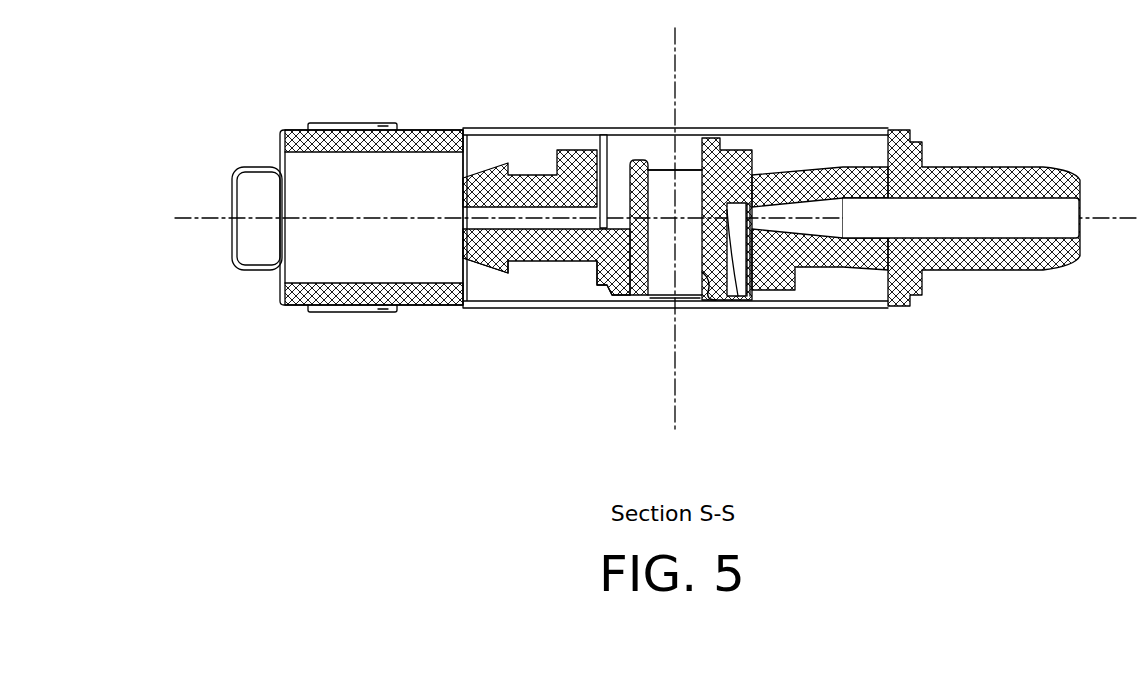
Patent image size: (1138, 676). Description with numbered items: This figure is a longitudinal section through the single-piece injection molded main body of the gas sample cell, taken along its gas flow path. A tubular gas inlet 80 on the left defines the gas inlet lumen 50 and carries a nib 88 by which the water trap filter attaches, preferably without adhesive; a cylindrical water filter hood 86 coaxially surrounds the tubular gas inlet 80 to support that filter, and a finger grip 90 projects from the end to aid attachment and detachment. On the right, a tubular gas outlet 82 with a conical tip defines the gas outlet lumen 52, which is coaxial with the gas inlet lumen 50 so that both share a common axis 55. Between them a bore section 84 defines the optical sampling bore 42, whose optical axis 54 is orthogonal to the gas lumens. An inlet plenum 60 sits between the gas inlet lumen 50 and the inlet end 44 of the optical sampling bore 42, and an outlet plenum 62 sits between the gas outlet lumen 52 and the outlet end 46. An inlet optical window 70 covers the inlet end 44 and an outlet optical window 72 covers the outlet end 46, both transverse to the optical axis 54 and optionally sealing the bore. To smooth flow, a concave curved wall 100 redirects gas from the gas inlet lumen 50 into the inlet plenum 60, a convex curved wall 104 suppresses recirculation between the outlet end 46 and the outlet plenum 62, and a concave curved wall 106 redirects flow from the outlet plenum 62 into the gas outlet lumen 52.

The optical sampling bore 42 is at (658, 262).
The inlet end 44 is at (696, 139).
The outlet end 46 is at (686, 285).
The gas inlet lumen 50 is at (538, 228).
The gas outlet lumen 52 is at (877, 232).
The optical axis 54 is at (676, 38).
The common axis 55 is at (1113, 216).
The inlet plenum 60 is at (626, 178).
The outlet plenum 62 is at (752, 272).
The inlet optical window 70 is at (660, 165).
The outlet optical window 72 is at (663, 298).
The tubular gas inlet 80 is at (532, 180).
The tubular gas outlet 82 is at (998, 178).
The bore section 84 is at (604, 283).
The cylindrical water filter hood 86 is at (335, 128).
The nib 88 is at (489, 262).
The finger grip 90 is at (250, 165).
The concave curved wall 100 is at (594, 178).
The convex curved wall 104 is at (738, 296).
The concave curved wall 106 is at (748, 298).